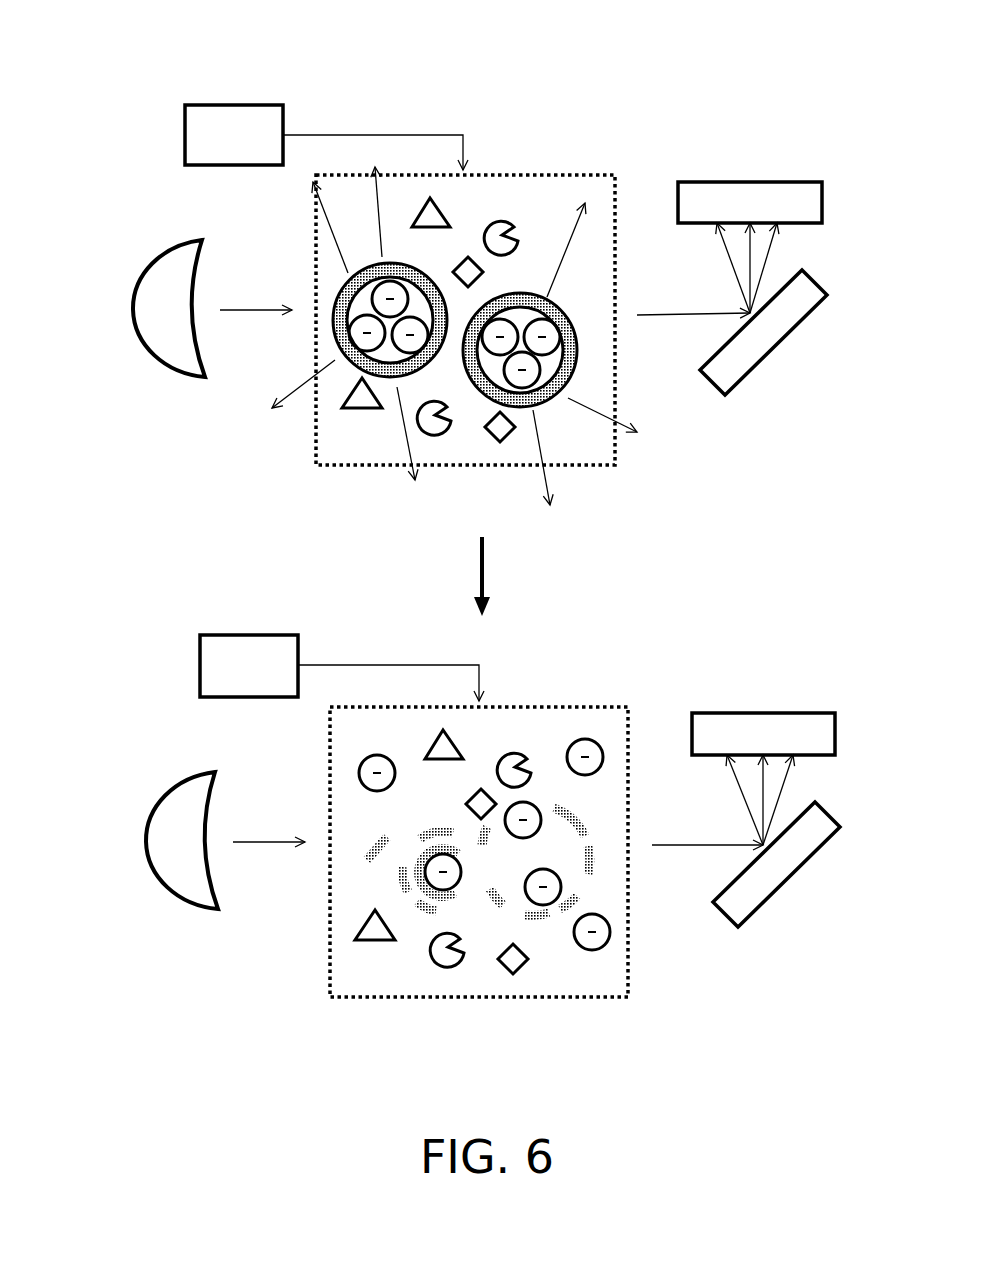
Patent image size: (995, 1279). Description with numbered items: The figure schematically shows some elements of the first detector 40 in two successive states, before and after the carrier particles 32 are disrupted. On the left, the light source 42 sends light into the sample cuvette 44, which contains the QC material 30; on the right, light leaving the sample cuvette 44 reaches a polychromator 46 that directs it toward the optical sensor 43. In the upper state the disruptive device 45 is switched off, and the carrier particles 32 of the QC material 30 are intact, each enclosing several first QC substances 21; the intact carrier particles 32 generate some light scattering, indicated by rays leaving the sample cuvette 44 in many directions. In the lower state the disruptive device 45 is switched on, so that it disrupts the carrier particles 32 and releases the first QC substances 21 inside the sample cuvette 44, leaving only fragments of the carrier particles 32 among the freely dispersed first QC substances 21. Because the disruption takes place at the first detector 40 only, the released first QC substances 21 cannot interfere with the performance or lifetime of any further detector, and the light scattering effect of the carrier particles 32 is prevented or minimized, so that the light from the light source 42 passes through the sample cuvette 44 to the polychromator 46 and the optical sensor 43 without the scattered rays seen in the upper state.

The first QC substances 21 is at (523, 378).
The QC material 30 is at (370, 440).
The carrier particles 32 is at (575, 368).
The first detector 40 is at (553, 125).
The light source 42 is at (135, 275).
The optical sensor 43 is at (750, 182).
The sample cuvette 44 is at (615, 460).
The disruptive device 45 is at (205, 105).
The polychromator 46 is at (768, 355).